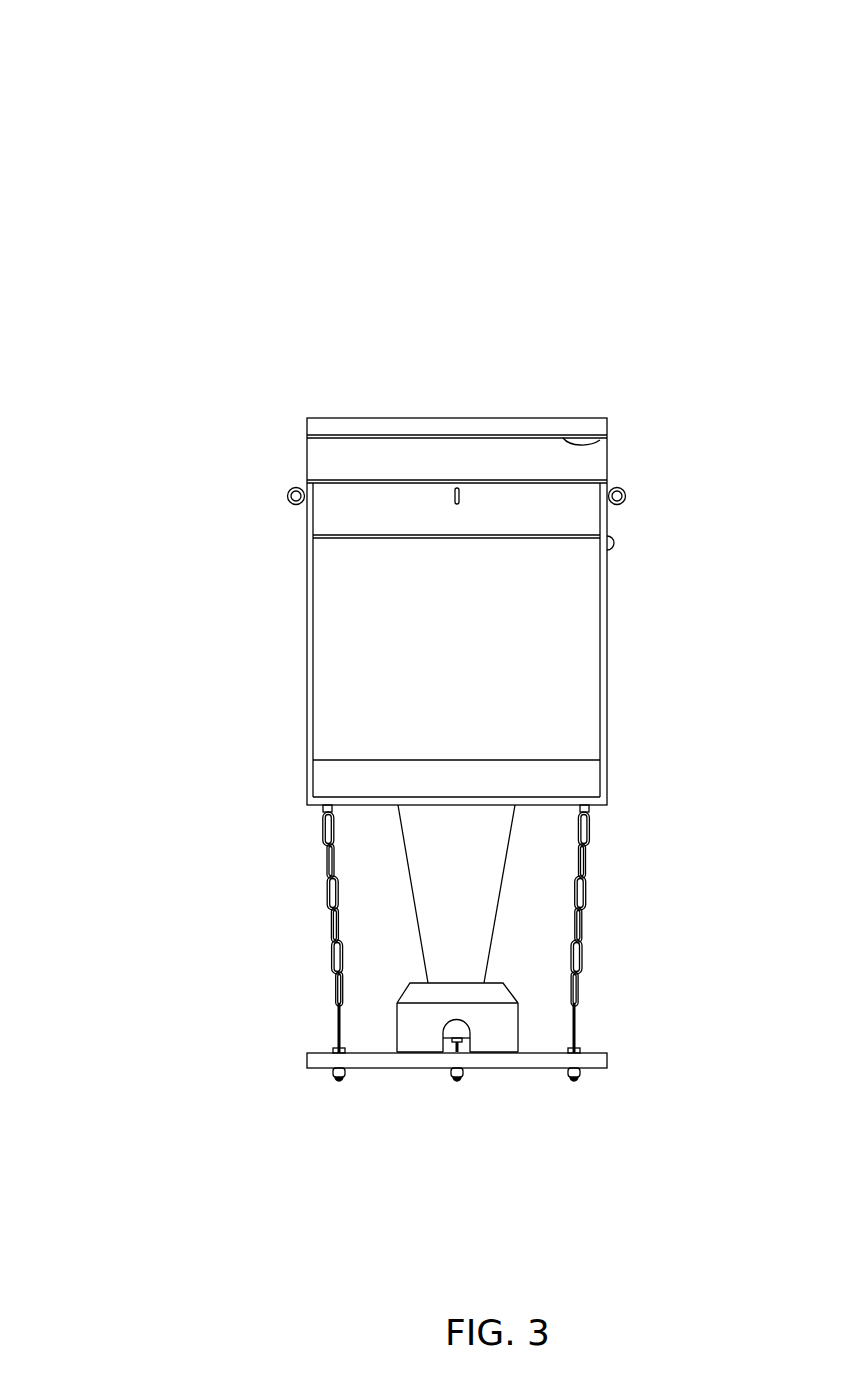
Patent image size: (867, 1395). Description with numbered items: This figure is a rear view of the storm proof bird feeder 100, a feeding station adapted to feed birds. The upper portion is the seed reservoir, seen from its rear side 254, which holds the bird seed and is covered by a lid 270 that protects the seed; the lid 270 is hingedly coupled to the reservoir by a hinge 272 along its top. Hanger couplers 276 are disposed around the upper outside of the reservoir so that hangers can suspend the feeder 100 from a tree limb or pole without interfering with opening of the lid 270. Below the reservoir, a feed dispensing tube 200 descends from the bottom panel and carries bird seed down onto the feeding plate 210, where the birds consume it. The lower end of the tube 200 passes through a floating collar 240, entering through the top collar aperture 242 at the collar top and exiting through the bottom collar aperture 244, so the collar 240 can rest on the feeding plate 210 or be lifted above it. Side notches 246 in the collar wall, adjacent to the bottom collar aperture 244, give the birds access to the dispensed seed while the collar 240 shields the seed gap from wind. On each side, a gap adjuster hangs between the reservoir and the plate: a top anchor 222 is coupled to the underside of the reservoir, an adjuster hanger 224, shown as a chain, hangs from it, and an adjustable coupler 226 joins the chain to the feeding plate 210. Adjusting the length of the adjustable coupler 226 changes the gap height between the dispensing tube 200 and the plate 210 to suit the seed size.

The storm proof bird feeder 100 is at (122, 180).
The lid 270 is at (515, 430).
The hinge 272 is at (607, 440).
The hanger couplers 276 is at (453, 500).
The rear side 254 is at (557, 616).
The feed dispensing tube 200 is at (433, 877).
The top collar aperture 242 is at (422, 978).
The floating collar 240 is at (410, 1032).
The side notches 246 is at (472, 1025).
The bottom collar aperture 244 is at (420, 1052).
The feeding plate 210 is at (310, 1057).
The top anchor 222 is at (590, 818).
The adjuster hanger 224 is at (586, 918).
The adjustable coupler 226 is at (634, 1095).